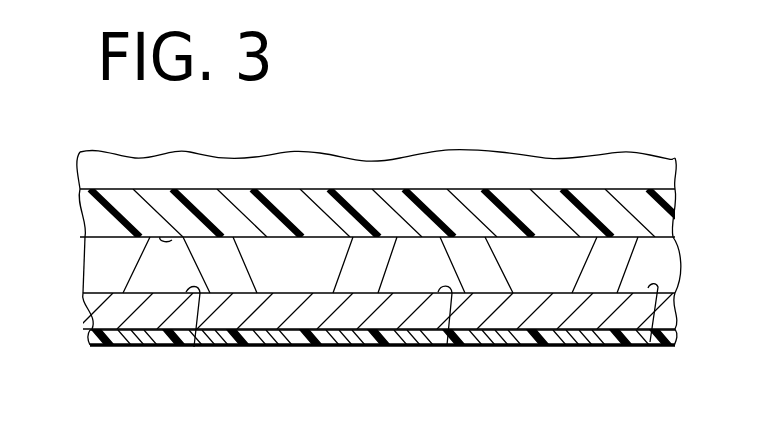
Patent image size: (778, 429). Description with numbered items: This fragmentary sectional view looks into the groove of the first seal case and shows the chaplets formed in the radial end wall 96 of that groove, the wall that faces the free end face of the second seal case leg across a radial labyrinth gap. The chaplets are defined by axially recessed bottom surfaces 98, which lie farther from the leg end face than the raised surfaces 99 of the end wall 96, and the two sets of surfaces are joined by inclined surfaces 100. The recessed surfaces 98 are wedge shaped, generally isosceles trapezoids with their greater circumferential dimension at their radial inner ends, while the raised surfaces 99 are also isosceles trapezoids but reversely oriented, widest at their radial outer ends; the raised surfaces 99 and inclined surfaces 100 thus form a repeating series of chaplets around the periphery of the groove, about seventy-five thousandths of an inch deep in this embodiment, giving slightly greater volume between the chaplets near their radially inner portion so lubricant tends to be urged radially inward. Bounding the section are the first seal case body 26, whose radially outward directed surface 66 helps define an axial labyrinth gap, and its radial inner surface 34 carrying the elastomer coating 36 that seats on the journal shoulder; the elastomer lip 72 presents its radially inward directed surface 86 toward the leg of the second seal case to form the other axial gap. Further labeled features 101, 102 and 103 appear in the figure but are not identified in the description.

The first seal case body 26 is at (95, 331).
The radial inner surface 34 is at (565, 347).
The elastomer coating 36 is at (113, 346).
The radially outward directed surface 66 is at (106, 291).
The elastomer lip 72 is at (389, 246).
The radially inward directed surface 86 is at (160, 237).
The radial end wall 96 is at (84, 243).
The recessed surfaces 98 is at (178, 276).
The raised surfaces 99 is at (310, 276).
The inclined surfaces 100 is at (112, 205).
The via 101 is at (196, 347).
The upper substrate 102 is at (263, 152).
The insulating strip 103 is at (296, 185).